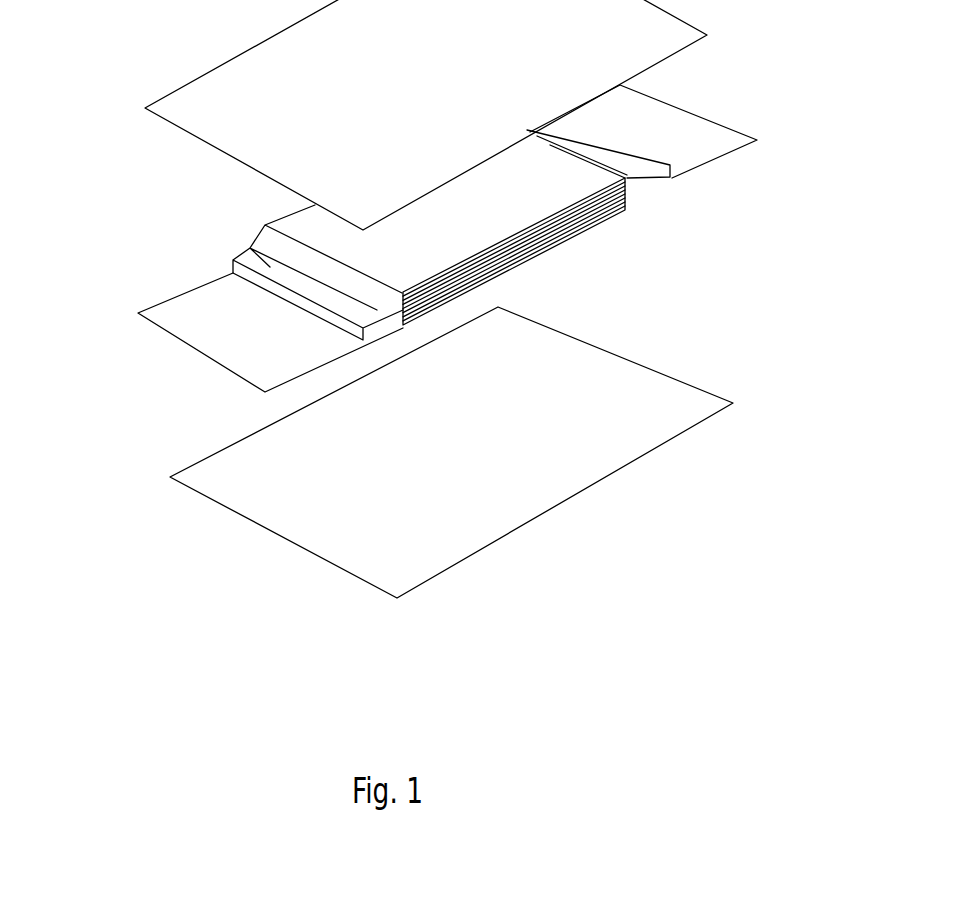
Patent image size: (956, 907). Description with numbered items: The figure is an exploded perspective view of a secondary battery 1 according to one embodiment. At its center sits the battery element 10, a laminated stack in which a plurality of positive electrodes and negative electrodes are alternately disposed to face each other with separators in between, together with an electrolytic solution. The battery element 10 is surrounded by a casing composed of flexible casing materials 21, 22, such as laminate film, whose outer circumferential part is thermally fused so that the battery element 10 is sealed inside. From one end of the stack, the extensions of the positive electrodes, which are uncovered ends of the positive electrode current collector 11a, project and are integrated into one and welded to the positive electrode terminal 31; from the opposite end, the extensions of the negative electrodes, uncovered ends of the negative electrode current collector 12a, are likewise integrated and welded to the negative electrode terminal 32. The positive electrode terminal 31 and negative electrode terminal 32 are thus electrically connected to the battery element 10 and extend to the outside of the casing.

The secondary battery 1 is at (312, 640).
The battery element 10 is at (590, 248).
The positive electrode current collector 11a is at (637, 185).
The negative electrode current collector 12a is at (250, 249).
The casing material 21 is at (255, 88).
The casing material 22 is at (460, 540).
The positive electrode terminal 31 is at (665, 128).
The negative electrode terminal 32 is at (207, 307).